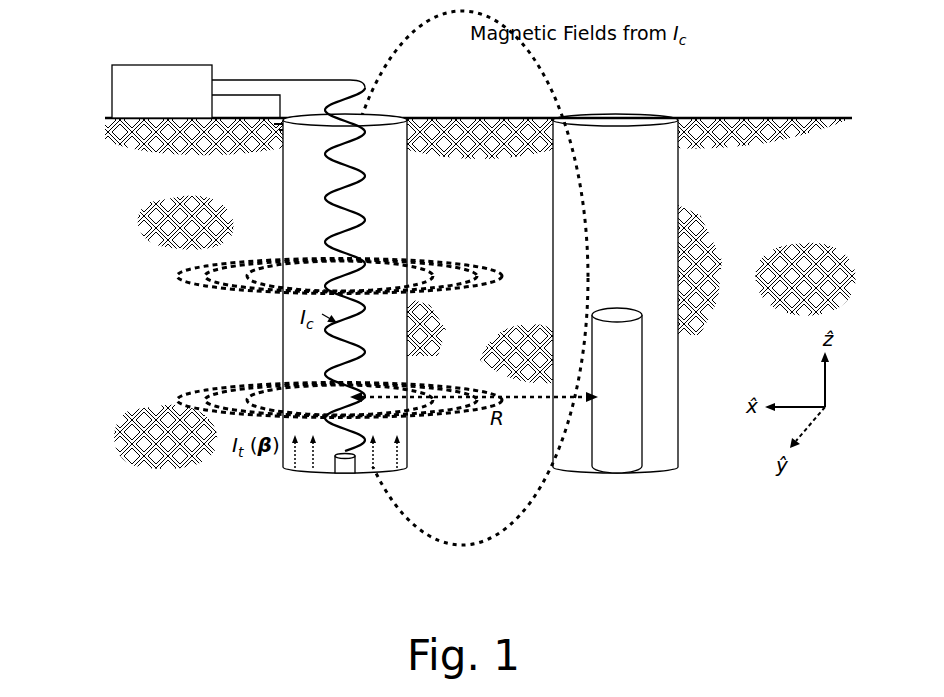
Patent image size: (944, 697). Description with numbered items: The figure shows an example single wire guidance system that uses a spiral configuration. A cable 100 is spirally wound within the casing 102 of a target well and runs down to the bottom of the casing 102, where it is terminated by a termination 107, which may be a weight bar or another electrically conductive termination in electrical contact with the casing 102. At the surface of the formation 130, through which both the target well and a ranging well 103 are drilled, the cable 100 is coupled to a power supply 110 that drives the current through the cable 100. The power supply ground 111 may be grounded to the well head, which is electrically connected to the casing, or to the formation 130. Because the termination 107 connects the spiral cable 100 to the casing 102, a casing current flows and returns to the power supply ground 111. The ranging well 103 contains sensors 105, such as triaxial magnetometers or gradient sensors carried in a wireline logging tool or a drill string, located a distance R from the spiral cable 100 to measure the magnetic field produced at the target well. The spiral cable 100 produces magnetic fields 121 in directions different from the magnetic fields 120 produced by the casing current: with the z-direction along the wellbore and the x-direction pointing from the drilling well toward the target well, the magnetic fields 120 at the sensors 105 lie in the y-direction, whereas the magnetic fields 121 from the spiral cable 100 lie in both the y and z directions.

The cable 100 is at (362, 90).
The casing 102 is at (412, 143).
The ranging well 103 is at (655, 118).
The sensors 105 is at (642, 438).
The termination 107 is at (335, 465).
The power supply 110 is at (162, 65).
The power supply ground 111 is at (275, 118).
The magnetic fields from the casing current 120 is at (177, 400).
The magnetic fields from the spiral cable 121 is at (177, 276).
The formation 130 is at (805, 125).